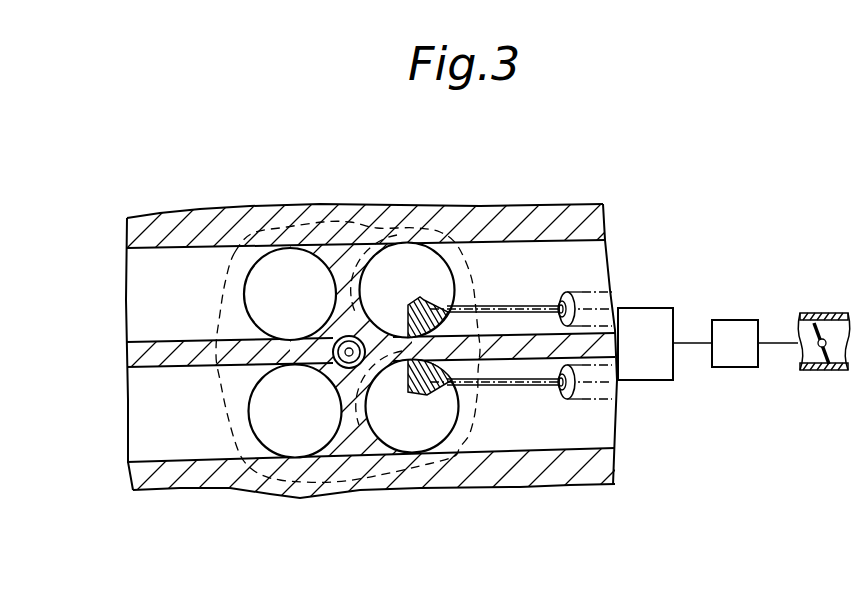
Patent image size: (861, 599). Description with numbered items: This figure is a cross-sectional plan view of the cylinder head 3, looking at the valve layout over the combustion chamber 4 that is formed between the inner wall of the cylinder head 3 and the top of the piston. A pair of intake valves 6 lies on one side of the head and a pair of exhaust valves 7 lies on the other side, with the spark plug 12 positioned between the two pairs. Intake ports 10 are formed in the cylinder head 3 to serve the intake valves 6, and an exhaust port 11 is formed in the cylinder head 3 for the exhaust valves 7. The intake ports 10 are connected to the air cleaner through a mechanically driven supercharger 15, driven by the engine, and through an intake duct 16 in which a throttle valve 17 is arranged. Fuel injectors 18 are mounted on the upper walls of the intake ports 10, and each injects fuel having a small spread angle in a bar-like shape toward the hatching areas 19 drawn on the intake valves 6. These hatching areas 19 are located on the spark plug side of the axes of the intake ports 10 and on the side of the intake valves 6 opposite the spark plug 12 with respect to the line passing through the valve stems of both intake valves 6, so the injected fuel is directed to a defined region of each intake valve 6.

The cylinder head 3 is at (490, 217).
The combustion chamber 4 is at (344, 229).
The intake valves 6 is at (410, 267).
The exhaust valves 7 is at (272, 277).
The intake ports 10 is at (538, 267).
The exhaust port 11 is at (180, 270).
The spark plug 12 is at (350, 362).
The supercharger 15 is at (732, 320).
The intake duct 16 is at (820, 315).
The throttle valve 17 is at (820, 370).
The fuel injectors 18 is at (604, 306).
The hatching areas 19 is at (433, 297).